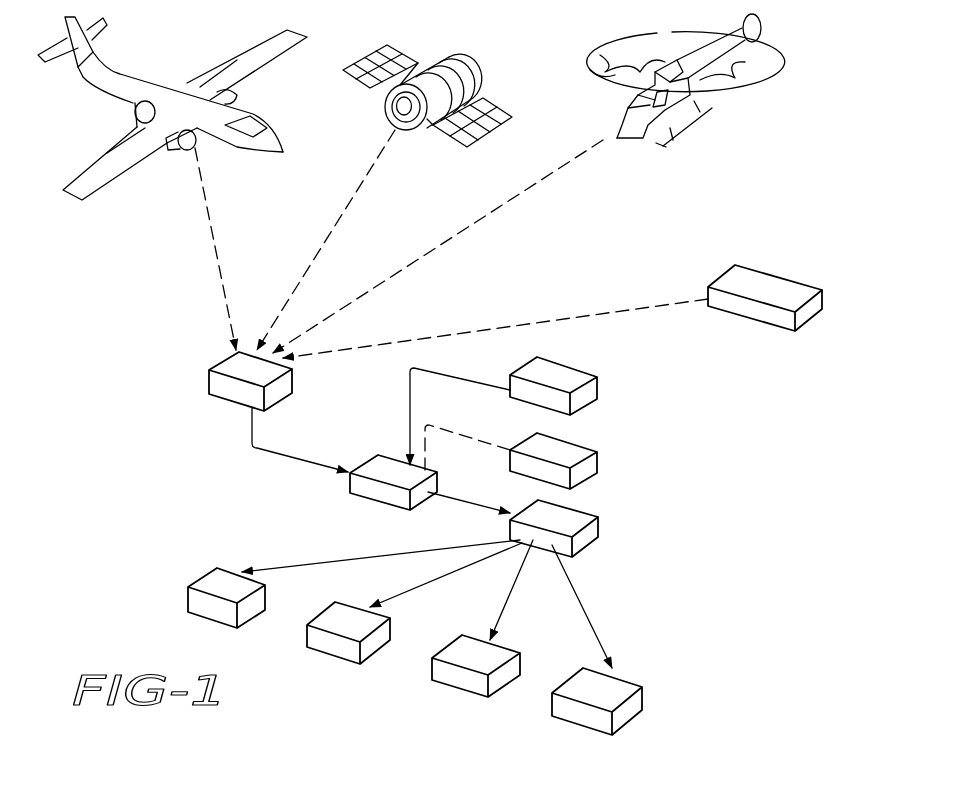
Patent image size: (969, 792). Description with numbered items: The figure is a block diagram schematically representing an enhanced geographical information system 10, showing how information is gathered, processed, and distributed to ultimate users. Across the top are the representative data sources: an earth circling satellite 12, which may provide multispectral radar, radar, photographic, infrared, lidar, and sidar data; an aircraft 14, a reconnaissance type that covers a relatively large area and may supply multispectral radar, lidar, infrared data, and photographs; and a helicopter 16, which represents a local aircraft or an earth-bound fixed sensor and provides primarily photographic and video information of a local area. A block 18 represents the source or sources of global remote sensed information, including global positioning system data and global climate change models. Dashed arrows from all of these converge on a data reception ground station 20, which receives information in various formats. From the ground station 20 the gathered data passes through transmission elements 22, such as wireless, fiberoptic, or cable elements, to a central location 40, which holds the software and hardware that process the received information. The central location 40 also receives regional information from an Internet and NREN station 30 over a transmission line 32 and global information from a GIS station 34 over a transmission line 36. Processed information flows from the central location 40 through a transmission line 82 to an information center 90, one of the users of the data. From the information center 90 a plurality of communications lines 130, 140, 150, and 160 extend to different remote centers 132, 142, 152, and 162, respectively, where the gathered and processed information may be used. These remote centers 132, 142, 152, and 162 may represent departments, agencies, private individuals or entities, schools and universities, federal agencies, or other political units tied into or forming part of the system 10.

The enhanced geographical information system 10 is at (797, 82).
The earth circling satellite 12 is at (468, 80).
The aircraft 14 is at (153, 102).
The helicopter 16 is at (700, 127).
The block representing source(s) of global remote sensed information 18 is at (798, 298).
The data reception ground station 20 is at (227, 362).
The transmission elements 22 is at (252, 448).
The Internet and NREN station 30 is at (598, 388).
The transmission line 32 is at (467, 355).
The GIS station 34 is at (598, 462).
The transmission line 36 is at (466, 436).
The central location 40 is at (388, 463).
The transmission line 82 is at (466, 473).
The information center 90 is at (600, 530).
The communications line 130 is at (628, 592).
The remote center 132 is at (620, 687).
The communications line 140 is at (522, 575).
The remote center 142 is at (468, 648).
The communications line 150 is at (458, 569).
The remote center 152 is at (345, 615).
The communications line 160 is at (368, 533).
The remote center 162 is at (212, 583).